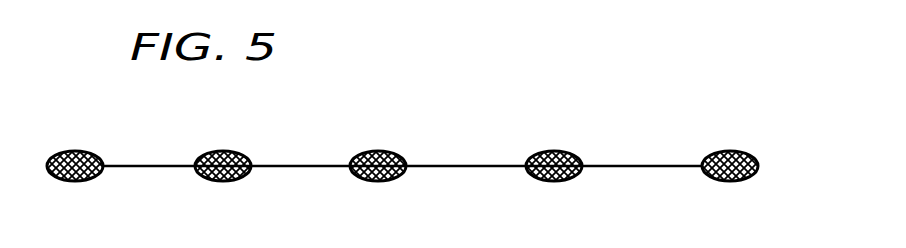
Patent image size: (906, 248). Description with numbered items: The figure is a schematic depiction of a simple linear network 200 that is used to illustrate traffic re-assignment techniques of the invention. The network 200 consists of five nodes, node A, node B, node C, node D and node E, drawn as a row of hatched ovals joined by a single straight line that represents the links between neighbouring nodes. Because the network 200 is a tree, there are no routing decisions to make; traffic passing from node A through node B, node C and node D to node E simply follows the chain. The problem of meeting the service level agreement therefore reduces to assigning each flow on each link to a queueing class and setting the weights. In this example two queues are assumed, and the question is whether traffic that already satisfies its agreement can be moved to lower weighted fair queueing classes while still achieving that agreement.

The linear network 200 is at (402, 143).
The node A is at (75, 182).
The node B is at (223, 182).
The node C is at (378, 182).
The node D is at (554, 182).
The node E is at (730, 182).